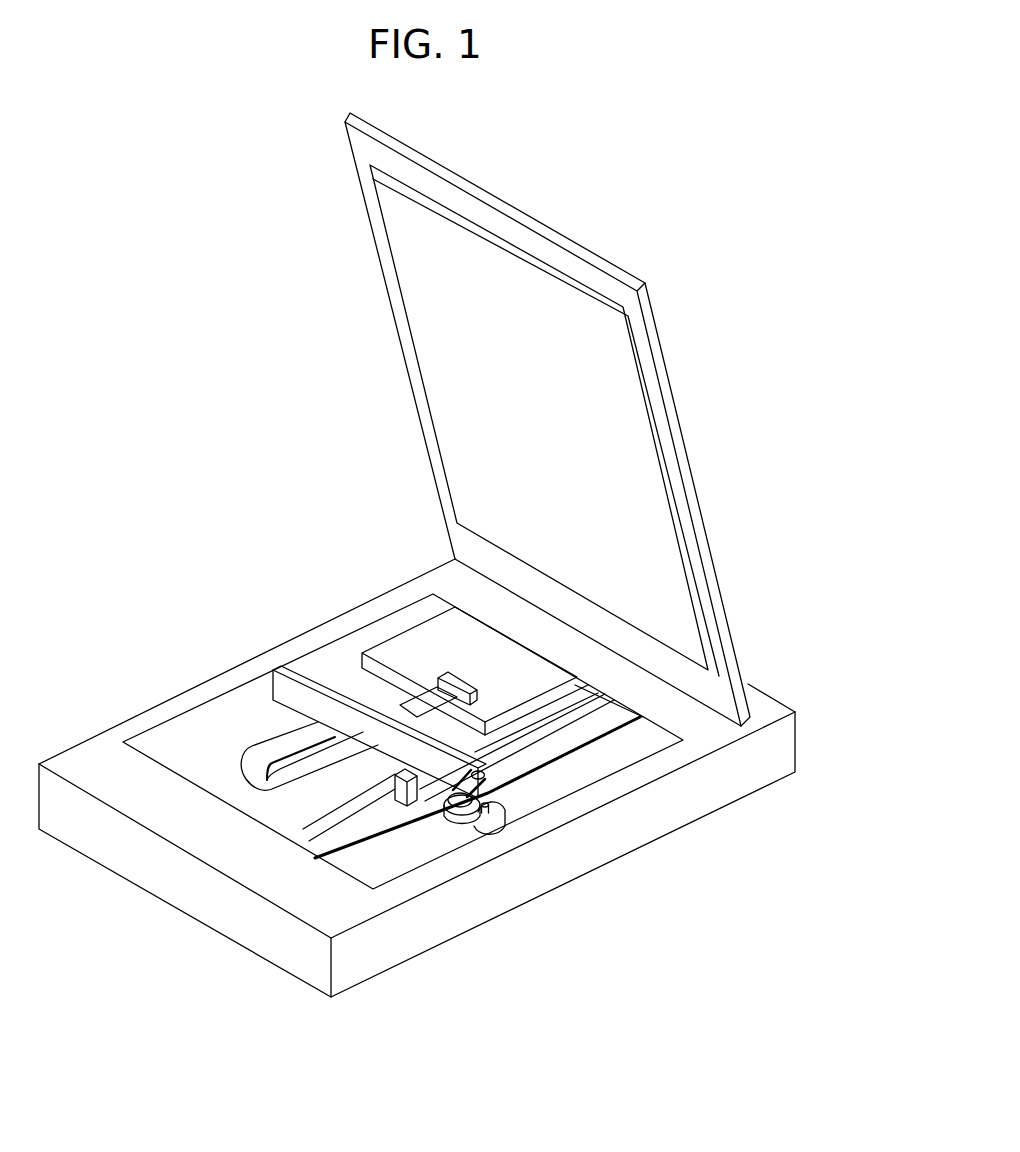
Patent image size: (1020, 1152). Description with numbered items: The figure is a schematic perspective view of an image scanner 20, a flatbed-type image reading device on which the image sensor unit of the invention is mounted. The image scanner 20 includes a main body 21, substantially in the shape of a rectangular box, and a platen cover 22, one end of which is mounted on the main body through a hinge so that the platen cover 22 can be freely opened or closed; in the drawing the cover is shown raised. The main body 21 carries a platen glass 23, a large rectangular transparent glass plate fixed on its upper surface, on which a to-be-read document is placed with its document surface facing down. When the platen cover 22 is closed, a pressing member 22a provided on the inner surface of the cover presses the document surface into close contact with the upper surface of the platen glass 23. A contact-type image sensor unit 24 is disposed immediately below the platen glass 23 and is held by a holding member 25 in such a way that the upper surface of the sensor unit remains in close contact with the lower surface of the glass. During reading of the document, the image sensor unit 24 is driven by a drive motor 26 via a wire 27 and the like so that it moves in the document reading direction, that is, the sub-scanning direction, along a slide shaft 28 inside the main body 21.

The image scanner 20 is at (228, 407).
The main body 21 is at (688, 797).
The platen cover 22 is at (513, 209).
The pressing member 22a is at (607, 405).
The platen glass 23 is at (152, 743).
The image sensor unit 24 is at (313, 680).
The holding member 25 is at (282, 690).
The drive motor 26 is at (487, 827).
The wire 27 is at (575, 755).
The slide shaft 28 is at (303, 830).